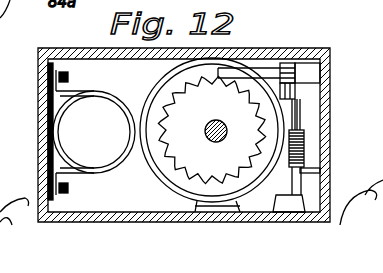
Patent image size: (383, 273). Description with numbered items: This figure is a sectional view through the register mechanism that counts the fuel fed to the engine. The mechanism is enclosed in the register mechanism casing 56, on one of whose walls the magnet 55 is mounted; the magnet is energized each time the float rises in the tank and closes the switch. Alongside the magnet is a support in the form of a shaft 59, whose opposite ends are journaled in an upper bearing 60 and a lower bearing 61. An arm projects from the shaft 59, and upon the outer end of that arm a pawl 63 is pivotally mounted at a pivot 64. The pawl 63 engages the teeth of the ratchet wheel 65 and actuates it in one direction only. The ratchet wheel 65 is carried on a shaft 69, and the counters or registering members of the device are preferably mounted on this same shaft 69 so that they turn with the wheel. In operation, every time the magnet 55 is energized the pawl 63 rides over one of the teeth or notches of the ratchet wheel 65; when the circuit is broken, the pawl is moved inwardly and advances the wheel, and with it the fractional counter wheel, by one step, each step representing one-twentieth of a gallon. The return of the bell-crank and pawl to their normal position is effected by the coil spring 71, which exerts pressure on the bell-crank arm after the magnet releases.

The magnet 55 is at (94, 132).
The register mechanism casing 56 is at (43, 109).
The shaft 59 is at (304, 134).
The upper bearing 60 is at (300, 91).
The lower bearing 61 is at (292, 201).
The pawl 63 is at (254, 70).
The pivot 64 is at (290, 62).
The ratchet wheel 65 is at (212, 135).
The shaft 69 is at (225, 118).
The coil spring 71 is at (303, 150).